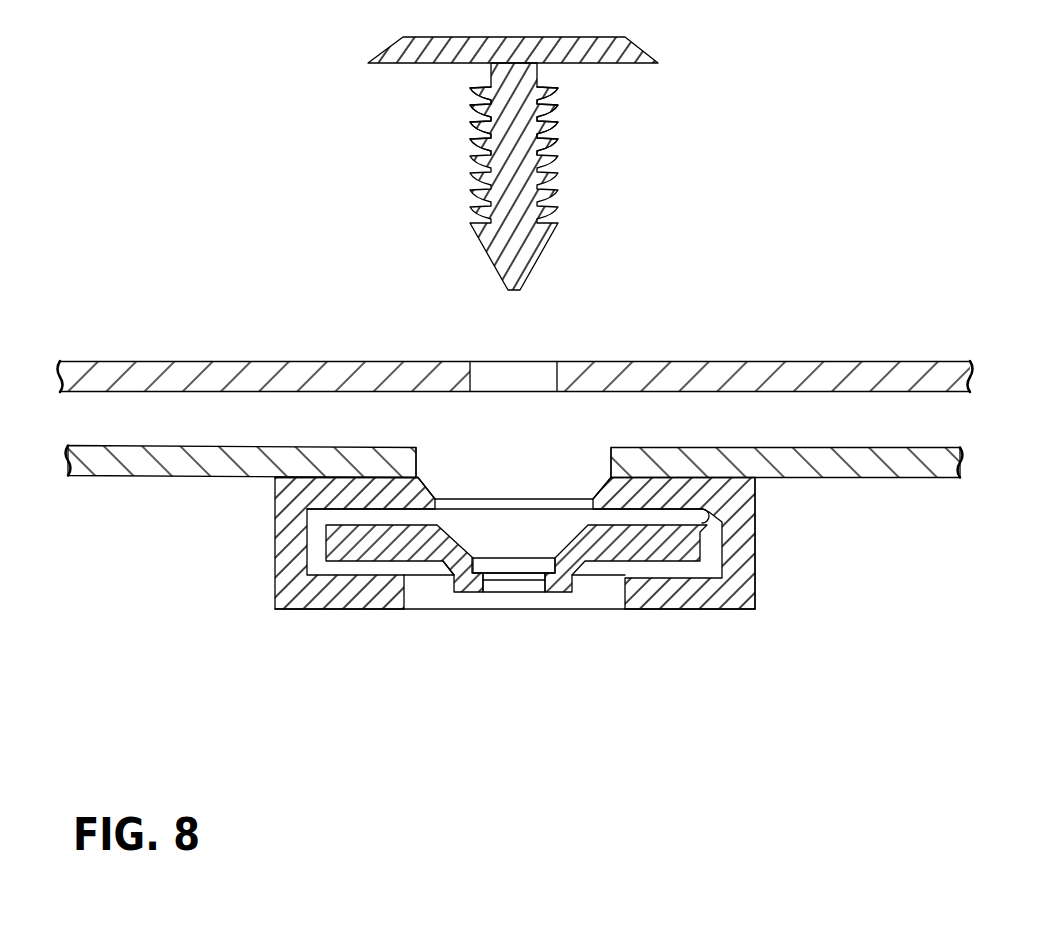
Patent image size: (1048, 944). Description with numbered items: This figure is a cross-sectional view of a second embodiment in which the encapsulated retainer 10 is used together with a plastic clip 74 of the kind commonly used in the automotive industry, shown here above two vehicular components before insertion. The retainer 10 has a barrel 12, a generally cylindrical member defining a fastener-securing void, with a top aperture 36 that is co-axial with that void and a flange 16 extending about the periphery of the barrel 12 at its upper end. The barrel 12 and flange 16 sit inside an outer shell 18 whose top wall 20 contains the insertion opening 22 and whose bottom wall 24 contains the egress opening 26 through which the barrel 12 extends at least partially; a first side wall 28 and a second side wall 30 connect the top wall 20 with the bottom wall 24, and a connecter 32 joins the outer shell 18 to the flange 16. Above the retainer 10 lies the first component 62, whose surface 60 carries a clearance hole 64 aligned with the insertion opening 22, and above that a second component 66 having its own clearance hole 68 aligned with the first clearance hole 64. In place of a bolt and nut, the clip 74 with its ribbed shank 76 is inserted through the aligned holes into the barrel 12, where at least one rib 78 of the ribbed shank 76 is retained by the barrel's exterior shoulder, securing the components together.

The encapsulated retainer 10 is at (511, 491).
The barrel 12 is at (421, 578).
The flange 16 is at (332, 541).
The outer shell 18 is at (765, 560).
The top wall 20 is at (297, 474).
The insertion opening 22 is at (470, 488).
The bottom wall 24 is at (312, 610).
The egress opening 26 is at (600, 593).
The first side wall 28 is at (274, 586).
The second side wall 30 is at (757, 594).
The connecter 32 is at (706, 527).
The top aperture 36 is at (531, 535).
The surface 60 is at (115, 476).
The first component 62 is at (915, 488).
The clearance hole 64 is at (561, 465).
The second component 66 is at (919, 358).
The clearance hole 68 is at (513, 379).
The plastic clip 74 is at (634, 58).
The ribbed shank 76 is at (527, 194).
The rib 78 is at (557, 128).